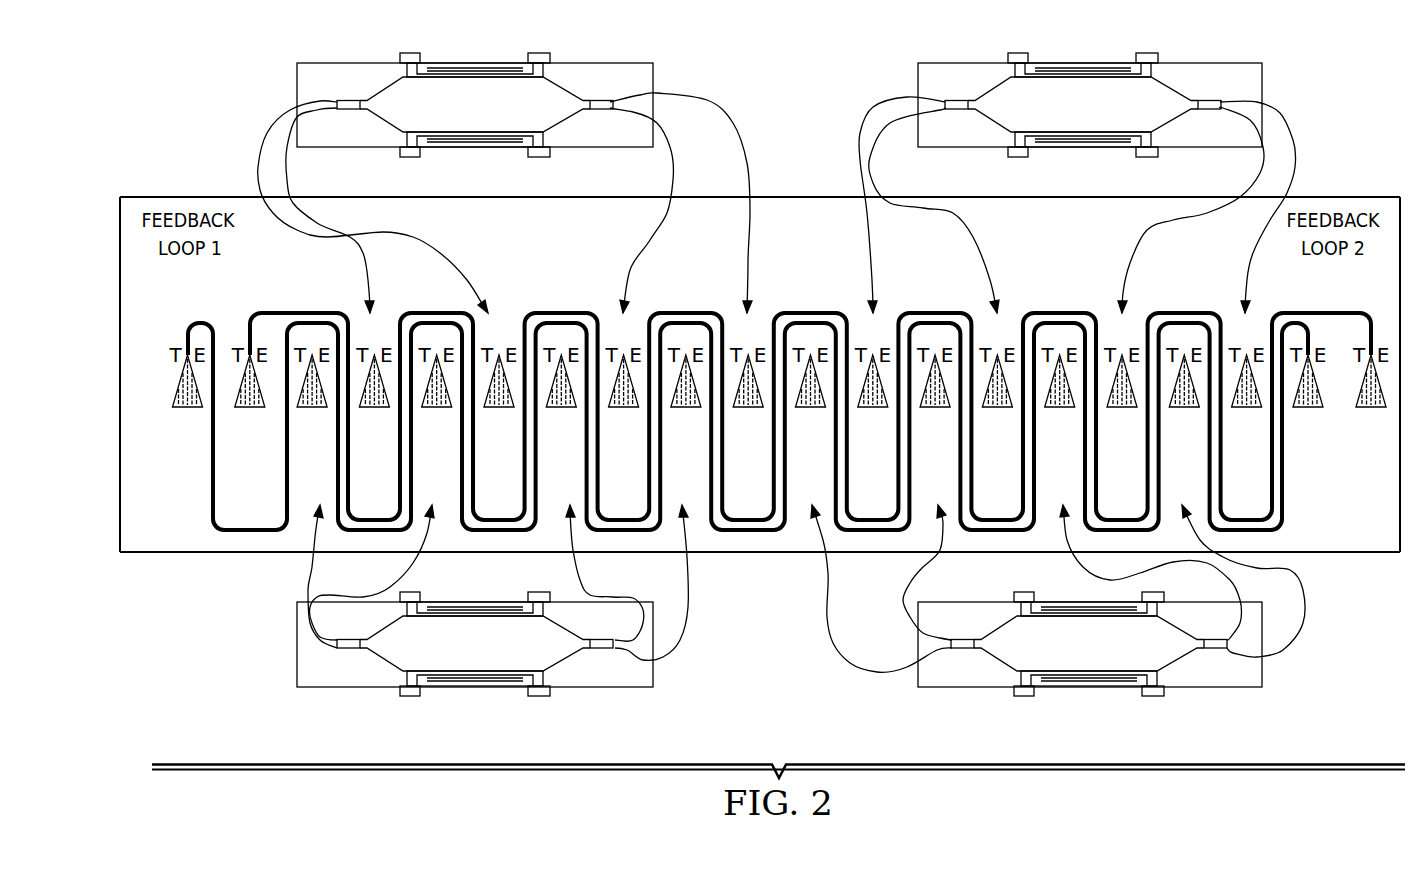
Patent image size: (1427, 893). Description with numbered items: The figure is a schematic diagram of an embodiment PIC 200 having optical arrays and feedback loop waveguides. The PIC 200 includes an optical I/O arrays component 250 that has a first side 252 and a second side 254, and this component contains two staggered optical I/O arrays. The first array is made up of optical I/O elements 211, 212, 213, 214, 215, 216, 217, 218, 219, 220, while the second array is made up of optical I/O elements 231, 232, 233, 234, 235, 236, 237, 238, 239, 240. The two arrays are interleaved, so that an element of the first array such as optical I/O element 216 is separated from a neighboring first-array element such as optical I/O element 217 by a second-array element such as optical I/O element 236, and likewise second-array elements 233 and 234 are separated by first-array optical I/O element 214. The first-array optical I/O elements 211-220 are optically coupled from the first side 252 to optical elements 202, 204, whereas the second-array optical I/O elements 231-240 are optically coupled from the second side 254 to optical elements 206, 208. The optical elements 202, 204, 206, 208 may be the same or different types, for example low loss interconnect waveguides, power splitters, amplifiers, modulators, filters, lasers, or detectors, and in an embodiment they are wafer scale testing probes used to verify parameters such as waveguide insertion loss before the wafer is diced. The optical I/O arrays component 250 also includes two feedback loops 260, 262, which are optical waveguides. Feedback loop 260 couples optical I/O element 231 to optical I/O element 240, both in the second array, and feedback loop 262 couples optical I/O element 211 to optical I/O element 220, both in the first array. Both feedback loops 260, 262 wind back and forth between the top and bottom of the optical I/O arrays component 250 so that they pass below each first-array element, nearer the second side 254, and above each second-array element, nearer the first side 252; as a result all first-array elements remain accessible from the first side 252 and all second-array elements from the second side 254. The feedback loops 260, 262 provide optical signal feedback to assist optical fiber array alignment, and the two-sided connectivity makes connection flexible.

The PIC 200 is at (236, 90).
The optical element 202 is at (474, 62).
The optical element 204 is at (1106, 62).
The optical element 206 is at (475, 688).
The optical element 208 is at (1088, 688).
The optical I/O element 211 is at (249, 403).
The optical I/O element 212 is at (373, 403).
The optical I/O element 213 is at (498, 403).
The optical I/O element 214 is at (623, 403).
The optical I/O element 215 is at (747, 403).
The optical I/O element 216 is at (872, 403).
The optical I/O element 217 is at (996, 403).
The optical I/O element 218 is at (1121, 403).
The optical I/O element 219 is at (1246, 403).
The optical I/O element 220 is at (1370, 403).
The optical I/O element 231 is at (187, 403).
The optical I/O element 232 is at (311, 403).
The optical I/O element 233 is at (436, 403).
The optical I/O element 234 is at (560, 403).
The optical I/O element 235 is at (685, 403).
The optical I/O element 236 is at (810, 403).
The optical I/O element 237 is at (934, 403).
The optical I/O element 238 is at (1059, 403).
The optical I/O element 239 is at (1183, 403).
The optical I/O element 240 is at (1307, 403).
The optical I/O arrays component 250 is at (213, 610).
The first side 252 is at (773, 197).
The second side 254 is at (765, 553).
The feedback loop 260 is at (205, 310).
The feedback loop 262 is at (1320, 310).